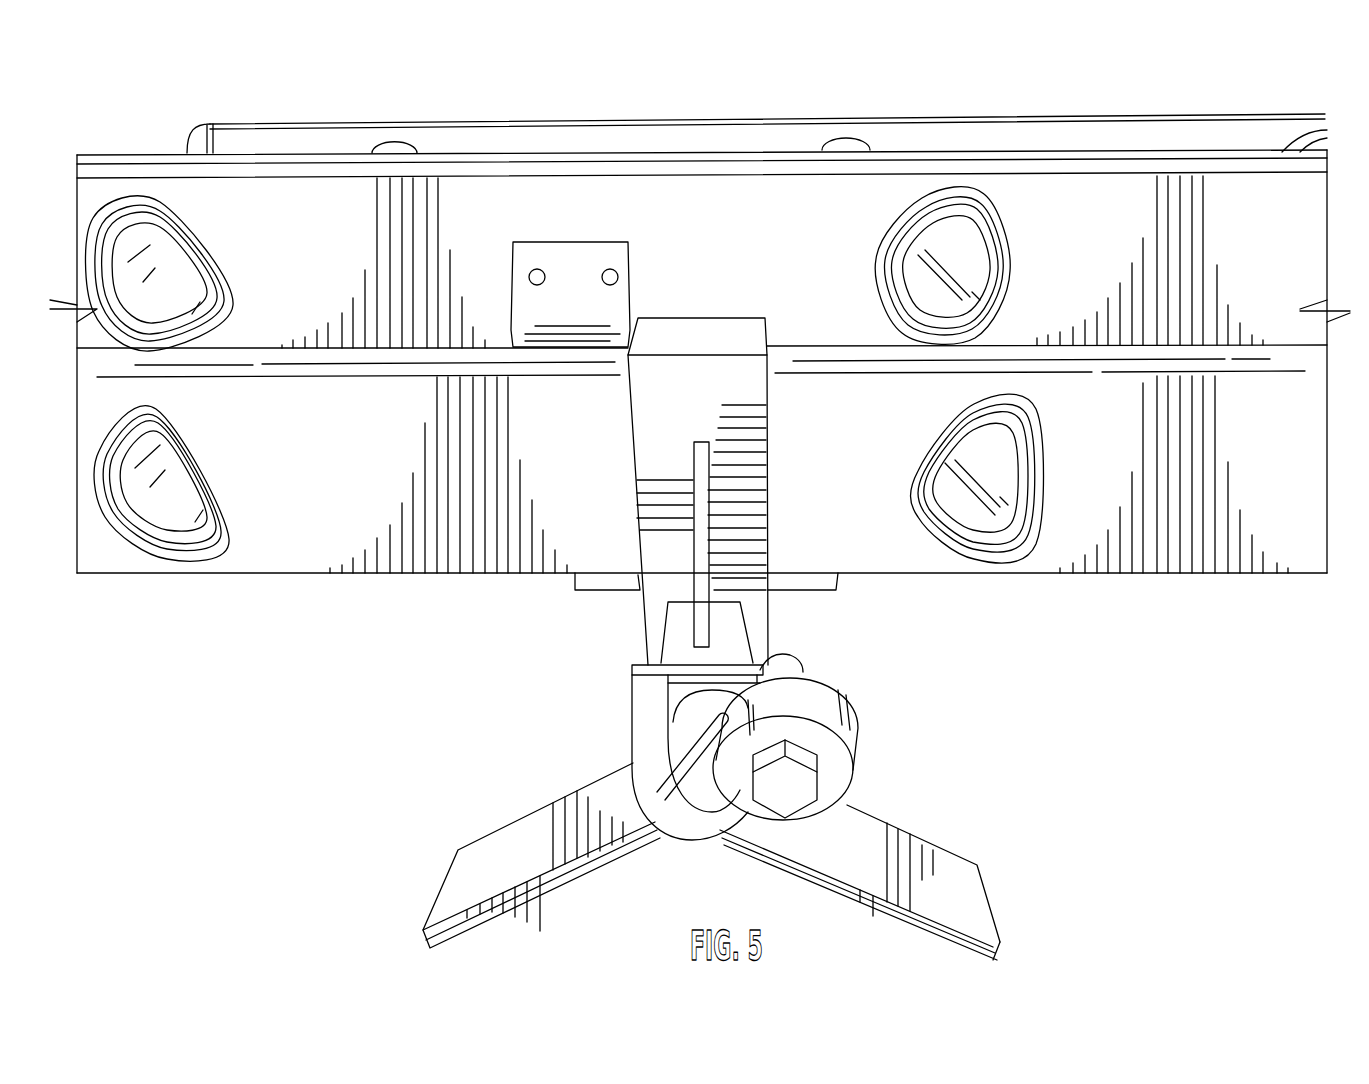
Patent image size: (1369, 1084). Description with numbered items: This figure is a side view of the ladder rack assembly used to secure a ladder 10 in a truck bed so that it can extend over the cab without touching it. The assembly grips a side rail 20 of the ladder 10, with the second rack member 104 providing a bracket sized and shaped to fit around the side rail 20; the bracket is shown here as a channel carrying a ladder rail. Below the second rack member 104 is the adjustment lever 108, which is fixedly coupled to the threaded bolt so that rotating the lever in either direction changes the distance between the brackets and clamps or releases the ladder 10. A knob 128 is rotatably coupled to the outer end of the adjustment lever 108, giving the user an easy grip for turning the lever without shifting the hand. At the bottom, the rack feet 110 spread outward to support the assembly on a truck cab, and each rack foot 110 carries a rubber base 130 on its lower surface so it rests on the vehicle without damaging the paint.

The ladder 10 is at (865, 203).
The side rail 20 is at (833, 512).
The second rack member 104 is at (650, 558).
The adjustment lever 108 is at (690, 780).
The rack foot 110 is at (500, 847).
The knob 128 is at (832, 747).
The rubber base 130 is at (447, 883).